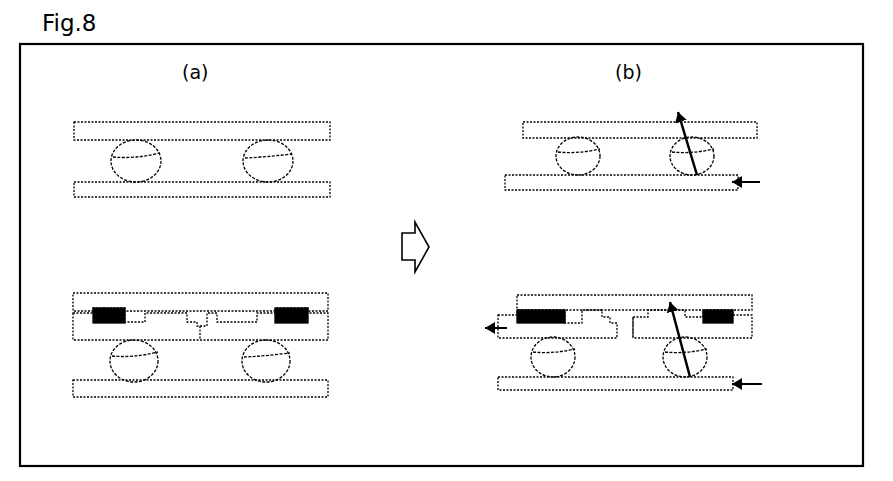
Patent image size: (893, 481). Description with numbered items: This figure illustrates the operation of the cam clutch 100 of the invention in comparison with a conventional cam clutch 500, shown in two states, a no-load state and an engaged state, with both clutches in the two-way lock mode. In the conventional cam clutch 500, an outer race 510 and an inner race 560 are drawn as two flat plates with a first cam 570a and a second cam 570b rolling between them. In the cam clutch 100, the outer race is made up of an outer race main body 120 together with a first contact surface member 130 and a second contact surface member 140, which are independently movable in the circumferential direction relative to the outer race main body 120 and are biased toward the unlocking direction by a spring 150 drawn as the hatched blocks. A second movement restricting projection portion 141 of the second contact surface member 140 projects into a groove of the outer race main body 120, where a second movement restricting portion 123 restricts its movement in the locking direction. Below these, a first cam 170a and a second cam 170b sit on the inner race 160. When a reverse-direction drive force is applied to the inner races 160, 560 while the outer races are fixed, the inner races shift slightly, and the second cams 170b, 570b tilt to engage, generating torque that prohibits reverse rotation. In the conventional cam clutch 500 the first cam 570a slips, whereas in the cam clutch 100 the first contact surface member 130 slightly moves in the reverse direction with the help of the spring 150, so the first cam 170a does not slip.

The conventional cam clutch 500 is at (150, 110).
The cam clutch 100 is at (142, 281).
The outer race 510 is at (727, 128).
The first cam 570a is at (580, 160).
The second cam 570b is at (687, 162).
The inner race 560 is at (700, 183).
The outer race main body 120 is at (703, 300).
The first contact surface member 130 is at (515, 333).
The second contact surface member 140 is at (737, 328).
The spring 150 is at (540, 312).
The second movement restricting portion 123 is at (647, 313).
The second movement restricting projection portion 141 is at (643, 318).
The inner race 160 is at (528, 383).
The first cam 170a is at (555, 363).
The second cam 170b is at (692, 384).